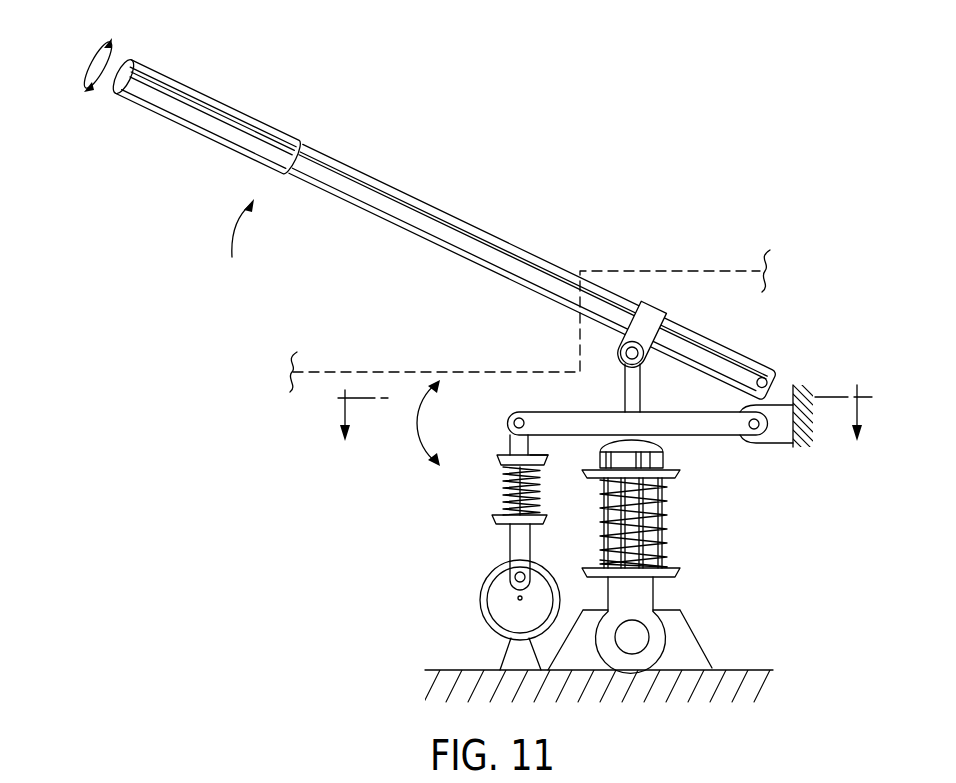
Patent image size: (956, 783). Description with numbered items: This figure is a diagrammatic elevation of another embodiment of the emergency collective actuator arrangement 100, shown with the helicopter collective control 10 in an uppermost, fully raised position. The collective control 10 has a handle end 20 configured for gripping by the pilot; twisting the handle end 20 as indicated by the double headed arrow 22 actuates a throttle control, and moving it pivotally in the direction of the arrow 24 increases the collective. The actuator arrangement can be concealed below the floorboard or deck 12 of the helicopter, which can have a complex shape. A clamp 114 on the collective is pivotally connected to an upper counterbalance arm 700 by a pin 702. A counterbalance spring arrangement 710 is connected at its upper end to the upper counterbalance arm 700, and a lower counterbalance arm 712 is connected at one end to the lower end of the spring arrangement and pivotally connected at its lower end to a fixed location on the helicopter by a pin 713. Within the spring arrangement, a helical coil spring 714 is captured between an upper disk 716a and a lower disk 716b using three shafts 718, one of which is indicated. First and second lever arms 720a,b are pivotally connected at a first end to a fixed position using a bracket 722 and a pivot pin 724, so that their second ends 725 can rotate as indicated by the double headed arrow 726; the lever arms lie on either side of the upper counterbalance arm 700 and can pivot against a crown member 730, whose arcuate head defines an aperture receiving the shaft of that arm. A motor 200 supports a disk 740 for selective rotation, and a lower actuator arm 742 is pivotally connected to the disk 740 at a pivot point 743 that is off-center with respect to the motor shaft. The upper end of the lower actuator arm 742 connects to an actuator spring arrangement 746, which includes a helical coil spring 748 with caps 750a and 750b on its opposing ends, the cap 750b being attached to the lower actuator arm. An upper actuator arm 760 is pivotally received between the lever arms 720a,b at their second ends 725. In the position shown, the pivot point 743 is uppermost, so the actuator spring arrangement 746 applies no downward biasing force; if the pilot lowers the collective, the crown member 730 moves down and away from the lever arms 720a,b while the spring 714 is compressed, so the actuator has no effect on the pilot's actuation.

The collective control 10 is at (582, 175).
The floorboard or deck 12 is at (688, 270).
The handle end 20 is at (274, 124).
The double headed arrow 22 is at (97, 44).
The arrow 24 is at (242, 245).
The emergency collective actuator arrangement 100 is at (374, 540).
The clamp 114 is at (660, 330).
The motor 200 is at (497, 631).
The upper counterbalance arm 700 is at (641, 376).
The pin 702 is at (622, 360).
The counterbalance spring arrangement 710 is at (674, 522).
The lower counterbalance arm 712 is at (655, 596).
The pin 713 is at (649, 640).
The helical coil spring 714 is at (667, 544).
The upper disk 716a is at (676, 478).
The lower disk 716b is at (674, 577).
The shafts 718 is at (600, 527).
The first and second lever arms 720a,b is at (556, 412).
The bracket 722 is at (793, 448).
The pivot pin 724 is at (752, 436).
The second ends 725 is at (511, 430).
The double headed arrow 726 is at (424, 412).
The crown member 730 is at (665, 452).
The disk 740 is at (484, 608).
The lower actuator arm 742 is at (509, 545).
The pivot point 743 is at (514, 578).
The actuator spring arrangement 746 is at (493, 503).
The helical coil spring 748 is at (542, 506).
The cap 750a is at (496, 461).
The cap 750b is at (492, 520).
The upper actuator arm 760 is at (546, 460).